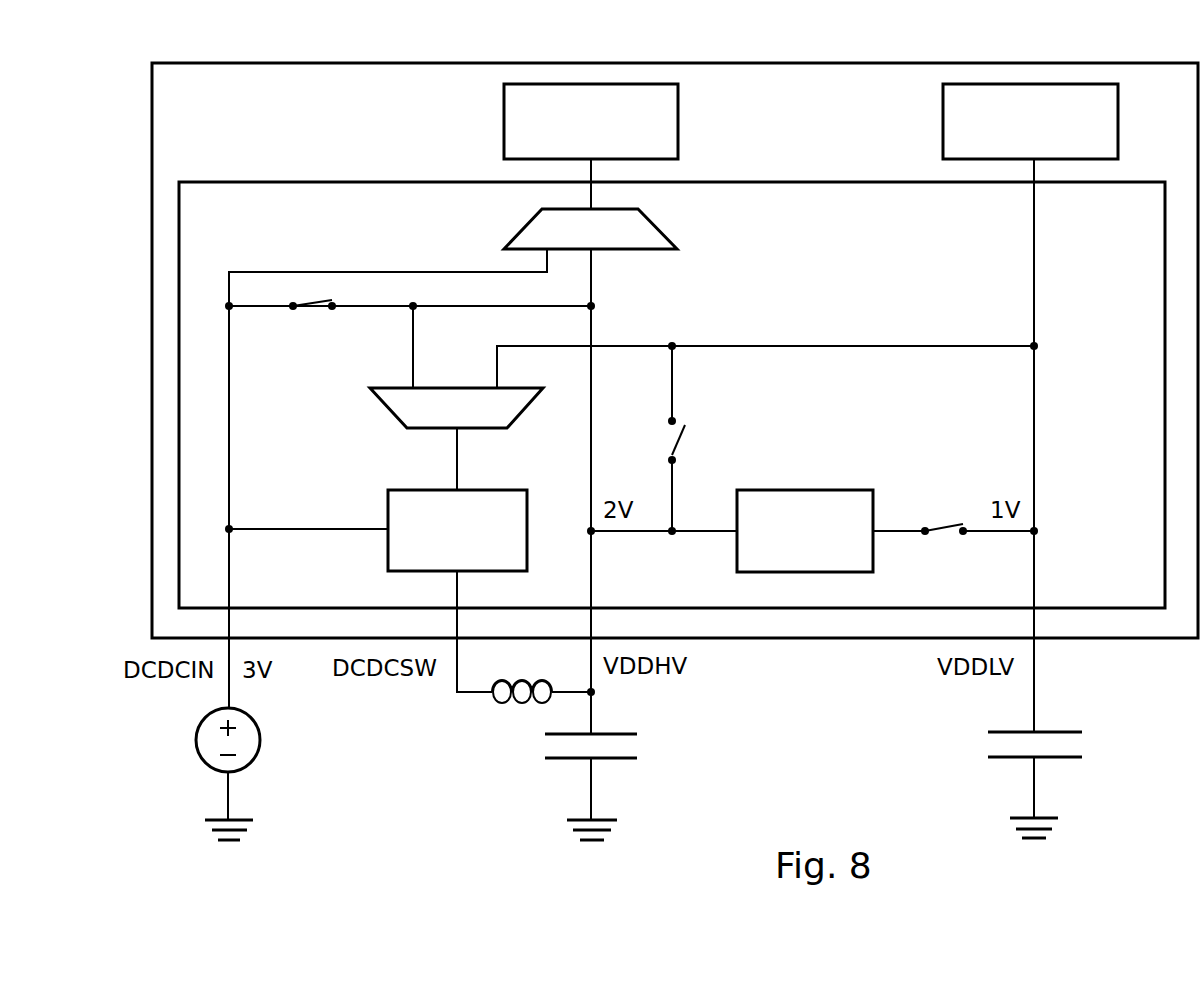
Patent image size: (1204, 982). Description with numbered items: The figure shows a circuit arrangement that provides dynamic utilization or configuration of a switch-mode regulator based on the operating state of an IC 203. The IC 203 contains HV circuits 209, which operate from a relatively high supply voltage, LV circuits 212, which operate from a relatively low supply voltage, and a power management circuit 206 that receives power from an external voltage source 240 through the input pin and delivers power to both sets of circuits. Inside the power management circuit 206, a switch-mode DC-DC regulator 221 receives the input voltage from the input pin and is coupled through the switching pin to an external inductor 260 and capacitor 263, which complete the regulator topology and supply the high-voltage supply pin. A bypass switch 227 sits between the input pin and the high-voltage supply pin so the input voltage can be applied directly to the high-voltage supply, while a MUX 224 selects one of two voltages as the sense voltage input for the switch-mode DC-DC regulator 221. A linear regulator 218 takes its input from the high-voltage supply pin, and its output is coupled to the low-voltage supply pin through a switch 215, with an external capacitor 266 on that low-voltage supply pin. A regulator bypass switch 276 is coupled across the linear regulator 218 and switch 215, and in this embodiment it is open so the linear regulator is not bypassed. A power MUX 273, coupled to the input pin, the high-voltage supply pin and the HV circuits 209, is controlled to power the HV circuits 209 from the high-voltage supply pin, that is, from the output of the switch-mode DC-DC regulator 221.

The IC 203 is at (1158, 640).
The power management circuit 206 is at (800, 181).
The HV circuits 209 is at (504, 118).
The LV circuits 212 is at (943, 120).
The power MUX 273 is at (633, 251).
The bypass switch 227 is at (315, 302).
The multiplexer (MUX) 224 is at (388, 408).
The switch-mode DC-DC regulator 221 is at (388, 512).
The regulator bypass switch 276 is at (680, 441).
The linear regulator 218 is at (807, 490).
The switch 215 is at (944, 528).
The voltage source 240 is at (205, 767).
The inductor 260 is at (525, 705).
The capacitor 263 is at (608, 760).
The capacitor 266 is at (1050, 760).